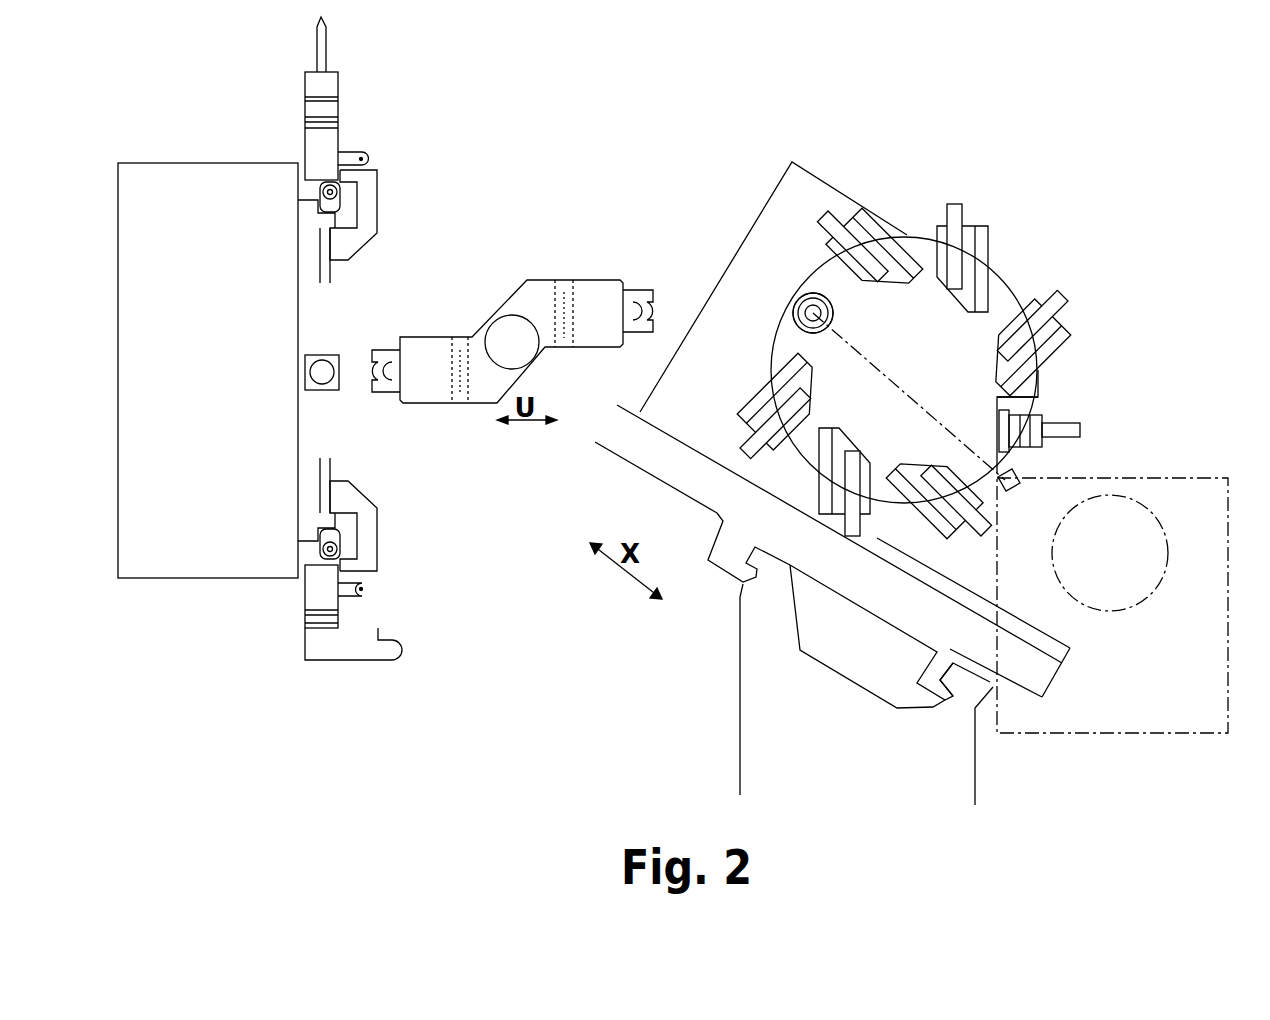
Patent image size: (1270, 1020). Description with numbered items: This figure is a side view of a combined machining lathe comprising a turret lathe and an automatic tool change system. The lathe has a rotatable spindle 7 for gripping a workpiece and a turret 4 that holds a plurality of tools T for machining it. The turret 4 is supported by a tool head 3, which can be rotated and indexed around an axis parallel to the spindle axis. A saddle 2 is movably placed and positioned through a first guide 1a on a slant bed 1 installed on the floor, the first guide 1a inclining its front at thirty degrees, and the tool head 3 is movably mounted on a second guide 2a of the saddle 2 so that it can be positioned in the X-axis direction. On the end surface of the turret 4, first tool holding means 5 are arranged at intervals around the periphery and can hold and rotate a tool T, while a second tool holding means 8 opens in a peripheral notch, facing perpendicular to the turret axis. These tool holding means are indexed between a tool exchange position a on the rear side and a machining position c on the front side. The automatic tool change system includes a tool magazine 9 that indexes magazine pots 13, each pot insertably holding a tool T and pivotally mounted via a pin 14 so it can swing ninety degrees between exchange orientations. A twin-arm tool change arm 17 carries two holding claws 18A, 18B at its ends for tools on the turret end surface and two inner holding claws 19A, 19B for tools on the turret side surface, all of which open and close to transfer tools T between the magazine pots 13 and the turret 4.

The slant bed 1 is at (745, 703).
The first guide 1a is at (985, 662).
The saddle 2 is at (1040, 685).
The second guide 2a is at (1062, 622).
The tool head 3 is at (815, 182).
The turret 4 is at (1003, 287).
The first tool holding means 5 is at (803, 295).
The spindle 7 is at (1165, 520).
The second tool holding means 8 is at (1005, 455).
The tool magazine 9 is at (200, 148).
The magazine pot 13 is at (340, 138).
The pin 14 is at (340, 192).
The tool change arm 17 is at (511, 335).
The holding claw 18A is at (385, 350).
The holding claw 18B is at (640, 290).
The holding claw 19A is at (460, 400).
The holding claw 19B is at (565, 348).
The tool T is at (335, 388).
The tool exchange position a is at (796, 305).
The machining position c is at (1019, 491).